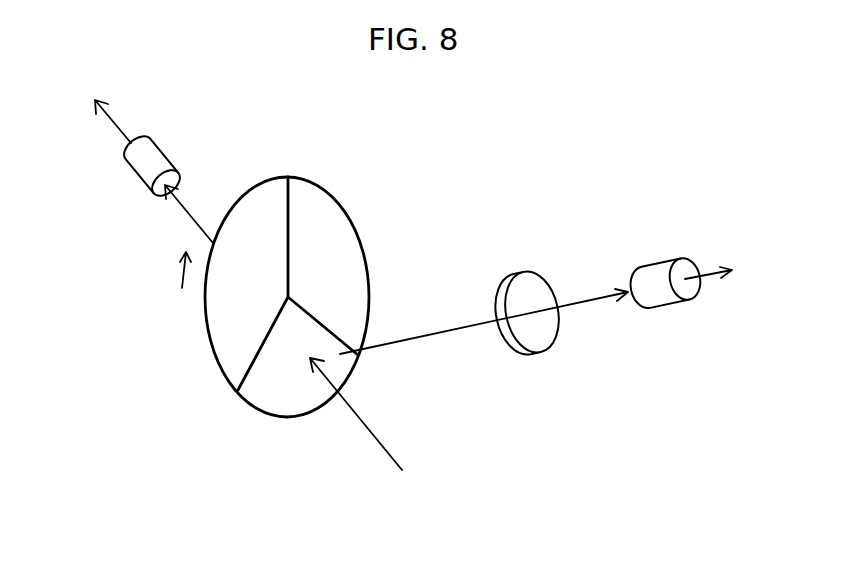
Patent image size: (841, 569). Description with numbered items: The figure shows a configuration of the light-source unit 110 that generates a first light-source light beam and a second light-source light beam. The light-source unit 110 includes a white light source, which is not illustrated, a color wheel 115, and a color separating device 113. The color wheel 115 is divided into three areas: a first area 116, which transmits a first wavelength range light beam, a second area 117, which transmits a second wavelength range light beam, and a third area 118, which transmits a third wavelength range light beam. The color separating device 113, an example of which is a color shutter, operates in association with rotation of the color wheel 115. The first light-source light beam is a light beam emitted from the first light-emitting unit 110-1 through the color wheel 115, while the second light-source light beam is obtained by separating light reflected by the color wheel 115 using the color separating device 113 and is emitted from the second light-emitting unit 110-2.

The light-source unit 110 is at (388, 126).
The first light-emitting unit 110-1 is at (166, 152).
The second light-emitting unit 110-2 is at (662, 298).
The color separating device 113 is at (533, 353).
The color wheel 115 is at (252, 407).
The first area 116 is at (217, 322).
The second area 117 is at (302, 388).
The third area 118 is at (351, 245).